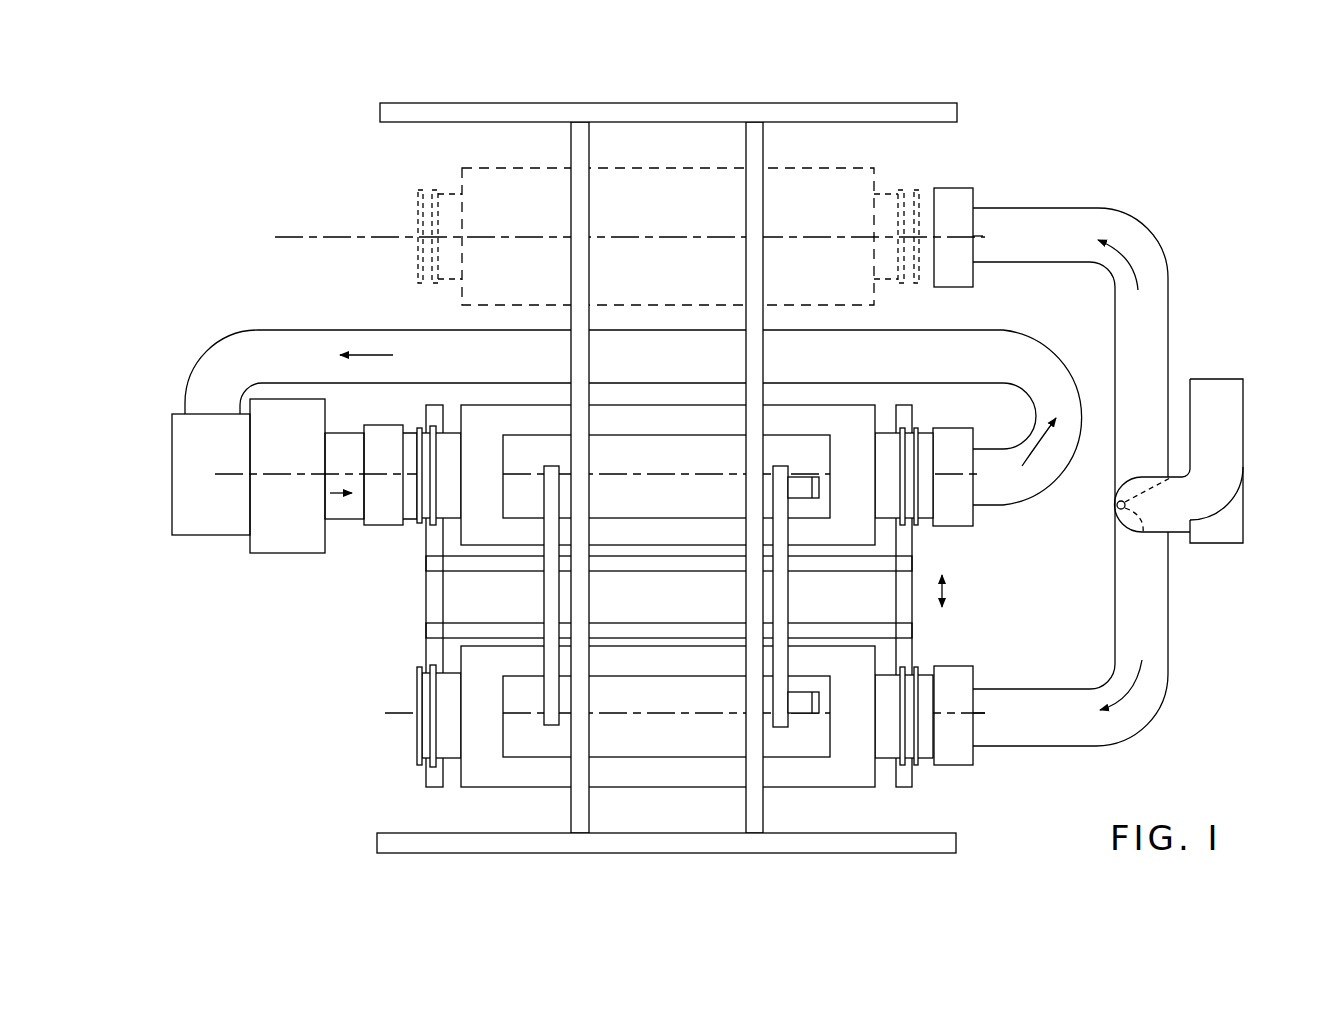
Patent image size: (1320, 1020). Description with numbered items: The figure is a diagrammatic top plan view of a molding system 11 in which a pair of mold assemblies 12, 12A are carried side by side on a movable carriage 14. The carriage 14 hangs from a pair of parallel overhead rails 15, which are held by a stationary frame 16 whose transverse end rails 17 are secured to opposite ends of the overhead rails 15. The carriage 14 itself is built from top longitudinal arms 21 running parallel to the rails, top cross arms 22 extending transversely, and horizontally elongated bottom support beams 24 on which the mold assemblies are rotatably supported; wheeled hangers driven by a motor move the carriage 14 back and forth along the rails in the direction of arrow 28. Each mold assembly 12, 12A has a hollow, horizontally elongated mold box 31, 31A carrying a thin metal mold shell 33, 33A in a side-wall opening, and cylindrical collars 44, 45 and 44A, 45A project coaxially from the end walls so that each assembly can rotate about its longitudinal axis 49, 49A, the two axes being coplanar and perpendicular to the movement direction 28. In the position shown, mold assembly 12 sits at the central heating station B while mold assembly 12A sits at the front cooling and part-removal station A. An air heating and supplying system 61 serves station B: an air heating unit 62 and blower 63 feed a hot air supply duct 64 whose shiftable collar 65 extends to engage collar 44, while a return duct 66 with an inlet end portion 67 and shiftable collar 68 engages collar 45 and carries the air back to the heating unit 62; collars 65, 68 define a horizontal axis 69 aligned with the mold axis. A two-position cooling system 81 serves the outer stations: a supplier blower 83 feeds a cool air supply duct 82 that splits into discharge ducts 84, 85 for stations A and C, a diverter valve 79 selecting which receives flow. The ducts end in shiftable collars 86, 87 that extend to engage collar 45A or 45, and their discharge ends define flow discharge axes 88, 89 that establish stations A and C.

The molding system 11 is at (295, 170).
The mold assembly 12 is at (651, 340).
The mold assembly 12A is at (603, 740).
The movable carriage 14 is at (680, 596).
The overhead rails 15 is at (592, 148).
The stationary frame 16 is at (484, 100).
The end rails 17 is at (860, 103).
The top longitudinal arms 21 is at (545, 583).
The top cross arms 22 is at (622, 560).
The bottom support beams 24 is at (426, 648).
The movement direction arrow 28 is at (947, 585).
The mold box 31 is at (700, 425).
The mold box 31A is at (710, 790).
The mold shell 33 is at (613, 445).
The mold shell 33A is at (668, 790).
The collar 44 is at (455, 440).
The collar 44A is at (440, 735).
The collar 45 is at (888, 445).
The collar 45A is at (880, 745).
The rotational axis 49 is at (635, 470).
The rotational axis 49A is at (680, 715).
The air heating and supplying system 61 is at (294, 518).
The air heating unit 62 is at (208, 540).
The blower 63 is at (265, 560).
The hot air supply duct 64 is at (348, 519).
The shiftable collar 65 is at (380, 445).
The return duct 66 is at (855, 352).
The inlet end portion 67 is at (1040, 488).
The shiftable collar 68 is at (970, 492).
The horizontal axis 69 is at (338, 470).
The flow control valve 79 is at (1138, 510).
The two-position cooling system 81 is at (1168, 290).
The cool air supply duct 82 is at (1208, 515).
The supplier blower 83 is at (1243, 515).
The discharge duct 84 is at (1070, 735).
The discharge duct 85 is at (1072, 215).
The shiftable collar 86 is at (955, 760).
The shiftable collar 87 is at (962, 188).
The flow discharge axis 88 is at (960, 715).
The flow discharge axis 89 is at (985, 236).